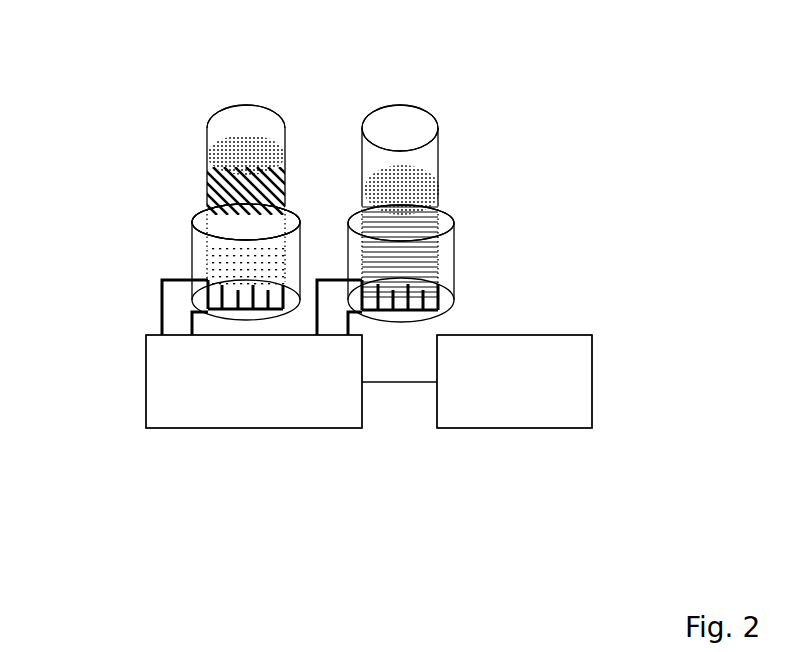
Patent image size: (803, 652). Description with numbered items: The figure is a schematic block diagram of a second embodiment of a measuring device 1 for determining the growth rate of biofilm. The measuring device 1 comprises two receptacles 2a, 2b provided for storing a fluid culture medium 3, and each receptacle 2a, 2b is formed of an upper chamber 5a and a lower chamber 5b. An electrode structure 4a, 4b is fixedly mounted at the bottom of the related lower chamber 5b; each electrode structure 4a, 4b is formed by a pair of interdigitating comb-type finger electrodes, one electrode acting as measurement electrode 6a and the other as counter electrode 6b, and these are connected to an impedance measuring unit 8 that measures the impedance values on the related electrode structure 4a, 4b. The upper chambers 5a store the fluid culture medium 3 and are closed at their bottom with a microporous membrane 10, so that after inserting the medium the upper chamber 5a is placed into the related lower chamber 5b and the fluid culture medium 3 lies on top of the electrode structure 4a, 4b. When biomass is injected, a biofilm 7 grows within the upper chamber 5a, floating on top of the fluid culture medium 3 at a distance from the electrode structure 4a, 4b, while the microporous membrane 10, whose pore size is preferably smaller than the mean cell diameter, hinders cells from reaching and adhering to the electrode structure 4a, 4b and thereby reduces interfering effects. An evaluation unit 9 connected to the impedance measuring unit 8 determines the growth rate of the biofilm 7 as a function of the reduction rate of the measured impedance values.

The measuring device 1 is at (597, 74).
The receptacle 2a is at (60, 105).
The receptacle 2b is at (550, 125).
The fluid culture medium 3 is at (235, 225).
The electrode structure 4a is at (208, 297).
The electrode structure 4b is at (440, 293).
The upper chamber 5a is at (208, 128).
The lower chamber 5b is at (205, 243).
The measurement electrode 6a is at (160, 318).
The counter electrode 6b is at (238, 312).
The biofilm 7 is at (208, 180).
The impedance measuring unit 8 is at (291, 381).
The evaluation unit 9 is at (514, 381).
The microporous membrane 10 is at (227, 265).